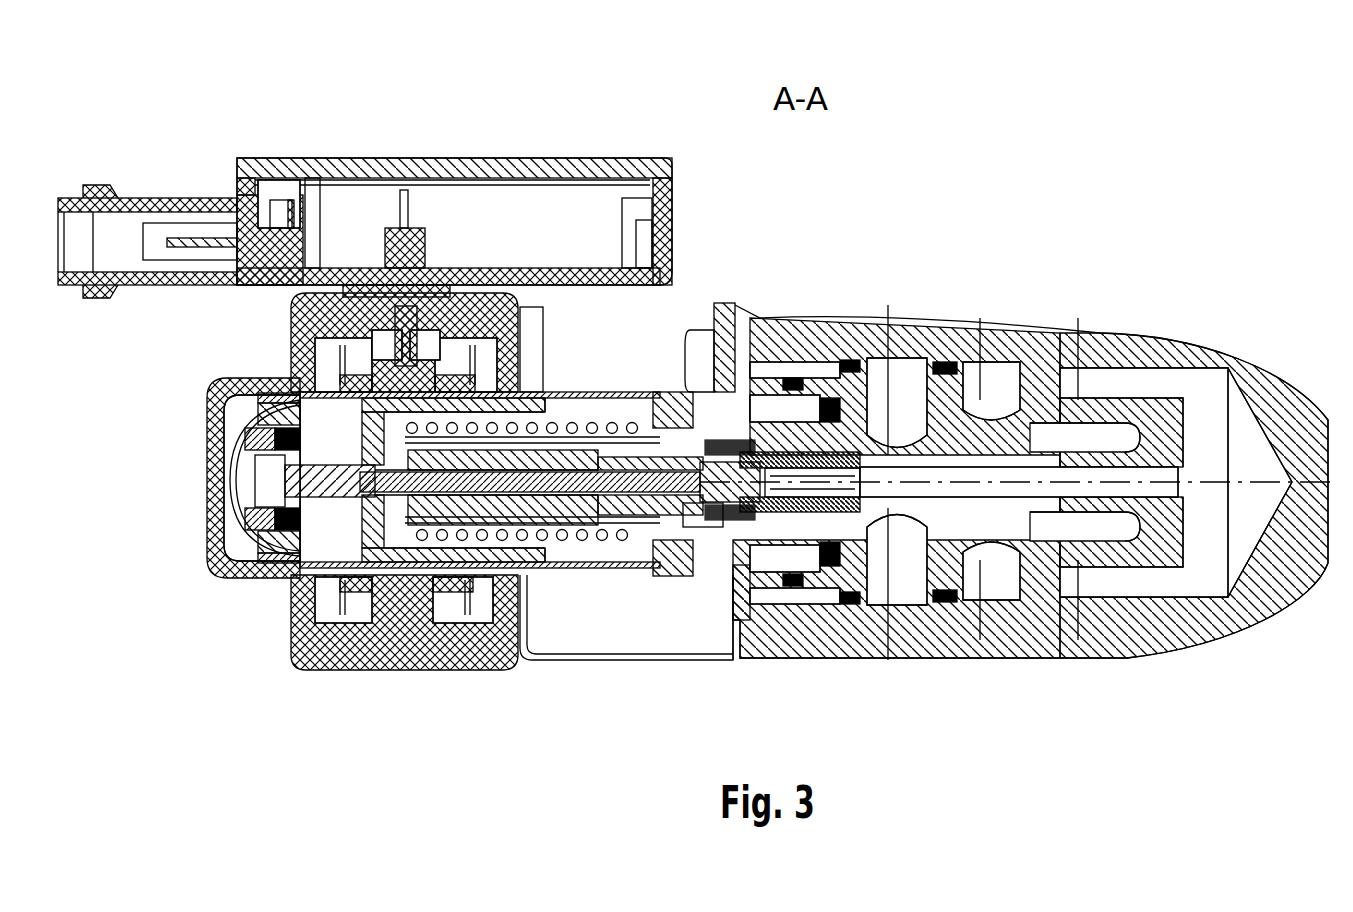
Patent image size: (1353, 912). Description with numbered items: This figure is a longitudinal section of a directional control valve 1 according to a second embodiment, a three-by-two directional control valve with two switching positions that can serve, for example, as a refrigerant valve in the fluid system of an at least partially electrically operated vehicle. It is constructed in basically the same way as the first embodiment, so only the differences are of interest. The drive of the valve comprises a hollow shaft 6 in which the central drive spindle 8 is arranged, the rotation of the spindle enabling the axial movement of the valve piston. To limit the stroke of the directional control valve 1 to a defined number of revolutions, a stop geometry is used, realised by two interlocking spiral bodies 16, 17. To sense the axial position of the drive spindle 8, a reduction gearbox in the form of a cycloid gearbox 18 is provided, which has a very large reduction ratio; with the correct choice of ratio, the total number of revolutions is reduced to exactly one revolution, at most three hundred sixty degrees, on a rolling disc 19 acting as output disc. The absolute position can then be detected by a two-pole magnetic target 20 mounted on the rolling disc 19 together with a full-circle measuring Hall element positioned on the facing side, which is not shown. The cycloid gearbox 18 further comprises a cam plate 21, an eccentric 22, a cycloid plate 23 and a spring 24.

The directional control valve 1 is at (272, 112).
The hollow shaft 6 is at (662, 520).
The drive spindle 8 is at (578, 460).
The spiral body 16 is at (598, 540).
The spiral body 17 is at (423, 560).
The cycloid gearbox 18 is at (222, 582).
The rolling disc 19 is at (240, 436).
The 2-pole magnetic target 20 is at (235, 540).
The cam plate 21 is at (237, 462).
The eccentric 22 is at (240, 497).
The cycloid plate 23 is at (240, 400).
The spring 24 is at (286, 590).